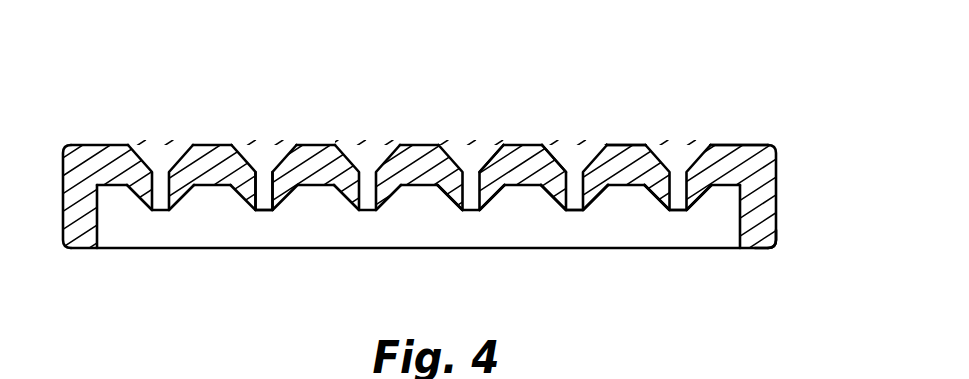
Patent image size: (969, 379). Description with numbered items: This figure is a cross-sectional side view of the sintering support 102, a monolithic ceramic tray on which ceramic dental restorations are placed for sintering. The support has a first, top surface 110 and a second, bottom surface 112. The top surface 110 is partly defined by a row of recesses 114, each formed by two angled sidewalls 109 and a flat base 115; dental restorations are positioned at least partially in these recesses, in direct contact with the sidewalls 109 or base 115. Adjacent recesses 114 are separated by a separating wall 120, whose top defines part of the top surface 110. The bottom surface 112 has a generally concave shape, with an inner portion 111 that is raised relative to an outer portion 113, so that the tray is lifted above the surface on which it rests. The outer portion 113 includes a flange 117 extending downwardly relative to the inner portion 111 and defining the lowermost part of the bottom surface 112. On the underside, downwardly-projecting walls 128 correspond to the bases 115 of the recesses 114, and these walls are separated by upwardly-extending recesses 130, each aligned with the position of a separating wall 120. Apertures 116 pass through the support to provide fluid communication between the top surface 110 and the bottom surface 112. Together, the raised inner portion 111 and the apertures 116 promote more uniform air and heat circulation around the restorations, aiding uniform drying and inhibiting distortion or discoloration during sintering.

The sintering support 102 is at (708, 35).
The sidewalls 109 is at (378, 155).
The top surface 110 is at (107, 145).
The inner portion 111 is at (658, 255).
The bottom surface 112 is at (208, 187).
The outer portion 113 is at (758, 252).
The recesses 114 is at (558, 145).
The base 115 is at (268, 158).
The apertures 116 is at (657, 202).
The flange 117 is at (767, 185).
The separating wall 120 is at (718, 147).
The downwardly-projecting walls 128 is at (357, 207).
The upwardly-extending recesses 130 is at (507, 193).